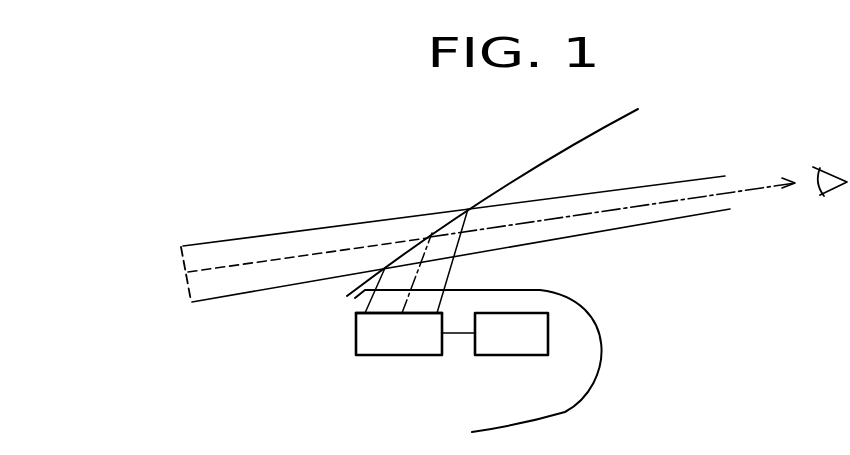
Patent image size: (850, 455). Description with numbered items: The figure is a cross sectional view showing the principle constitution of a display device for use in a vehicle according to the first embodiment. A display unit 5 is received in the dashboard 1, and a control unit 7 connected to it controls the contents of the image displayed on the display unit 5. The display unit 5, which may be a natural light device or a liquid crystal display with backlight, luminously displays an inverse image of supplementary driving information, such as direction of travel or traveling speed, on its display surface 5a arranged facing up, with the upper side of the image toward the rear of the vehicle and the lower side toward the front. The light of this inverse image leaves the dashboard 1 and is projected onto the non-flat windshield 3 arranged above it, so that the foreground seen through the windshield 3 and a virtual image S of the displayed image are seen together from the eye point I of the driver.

The dashboard 1 is at (542, 291).
The windshield 3 is at (542, 162).
The display unit 5 is at (392, 347).
The display surface 5a is at (415, 313).
The control unit 7 is at (492, 345).
The virtual image S is at (180, 262).
The eye point I is at (825, 160).